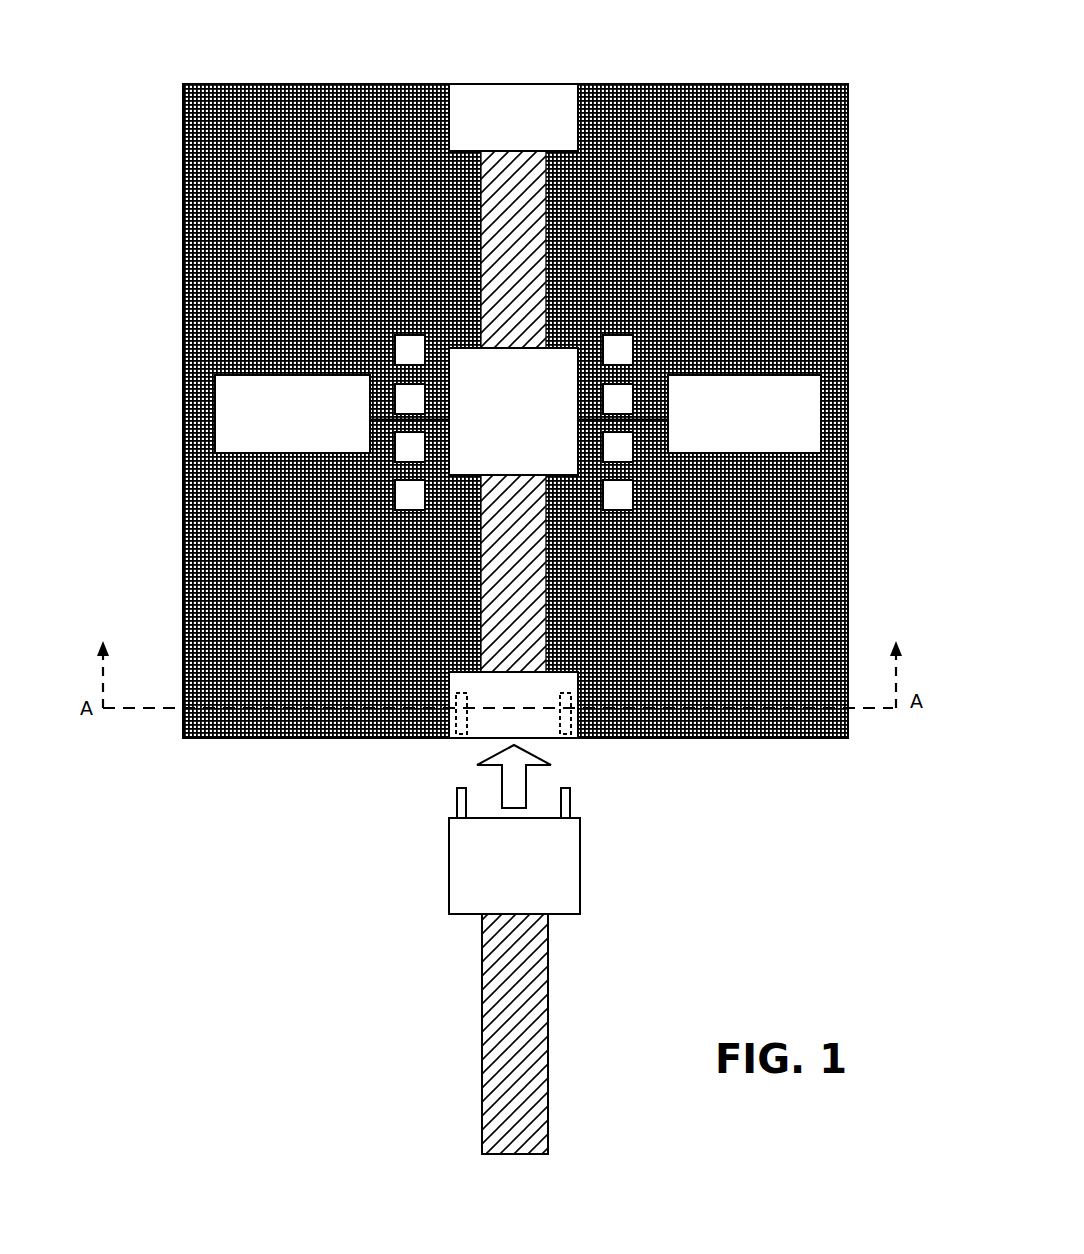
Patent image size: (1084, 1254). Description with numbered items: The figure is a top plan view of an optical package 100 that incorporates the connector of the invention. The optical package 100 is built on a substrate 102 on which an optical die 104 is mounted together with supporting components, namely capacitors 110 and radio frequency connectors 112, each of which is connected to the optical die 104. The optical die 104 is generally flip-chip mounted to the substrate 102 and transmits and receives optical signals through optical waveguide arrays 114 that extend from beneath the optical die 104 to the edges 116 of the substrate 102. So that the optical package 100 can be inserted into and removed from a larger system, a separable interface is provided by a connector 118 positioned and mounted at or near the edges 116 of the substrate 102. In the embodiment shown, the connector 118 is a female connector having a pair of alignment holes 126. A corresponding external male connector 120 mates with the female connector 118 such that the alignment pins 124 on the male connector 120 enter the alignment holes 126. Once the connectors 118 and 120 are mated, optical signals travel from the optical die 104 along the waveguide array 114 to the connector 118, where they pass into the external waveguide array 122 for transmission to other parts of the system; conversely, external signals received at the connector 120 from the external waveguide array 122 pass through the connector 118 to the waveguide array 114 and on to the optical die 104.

The optical package 100 is at (631, 54).
The substrate 102 is at (515, 411).
The optical die 104 is at (521, 424).
The capacitors 110 is at (410, 340).
The radio frequency (RF) connectors 112 is at (296, 439).
The optical waveguide arrays 114 is at (538, 232).
The edges of the substrate 116 is at (372, 76).
The connector 118 is at (521, 120).
The external male connector 120 is at (521, 868).
The external waveguide array 122 is at (540, 973).
The alignment pins 124 is at (562, 797).
The alignment holes 126 is at (453, 730).